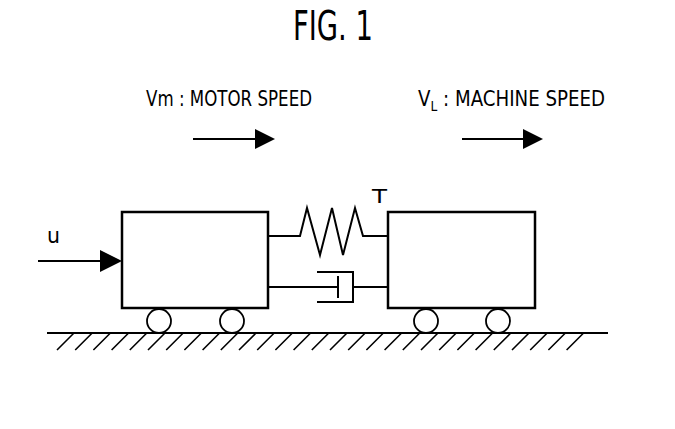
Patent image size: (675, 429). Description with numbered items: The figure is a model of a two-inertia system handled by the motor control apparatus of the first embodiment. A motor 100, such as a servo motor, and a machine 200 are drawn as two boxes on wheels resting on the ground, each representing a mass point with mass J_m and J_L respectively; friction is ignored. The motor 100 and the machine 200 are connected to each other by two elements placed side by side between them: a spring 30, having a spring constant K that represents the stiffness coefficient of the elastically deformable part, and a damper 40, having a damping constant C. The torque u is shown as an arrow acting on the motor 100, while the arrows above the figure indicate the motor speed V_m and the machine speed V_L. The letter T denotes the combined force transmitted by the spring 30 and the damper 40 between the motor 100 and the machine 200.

The motor 100 is at (140, 211).
The machine 200 is at (535, 250).
The spring 30 is at (310, 208).
The damper 40 is at (326, 302).